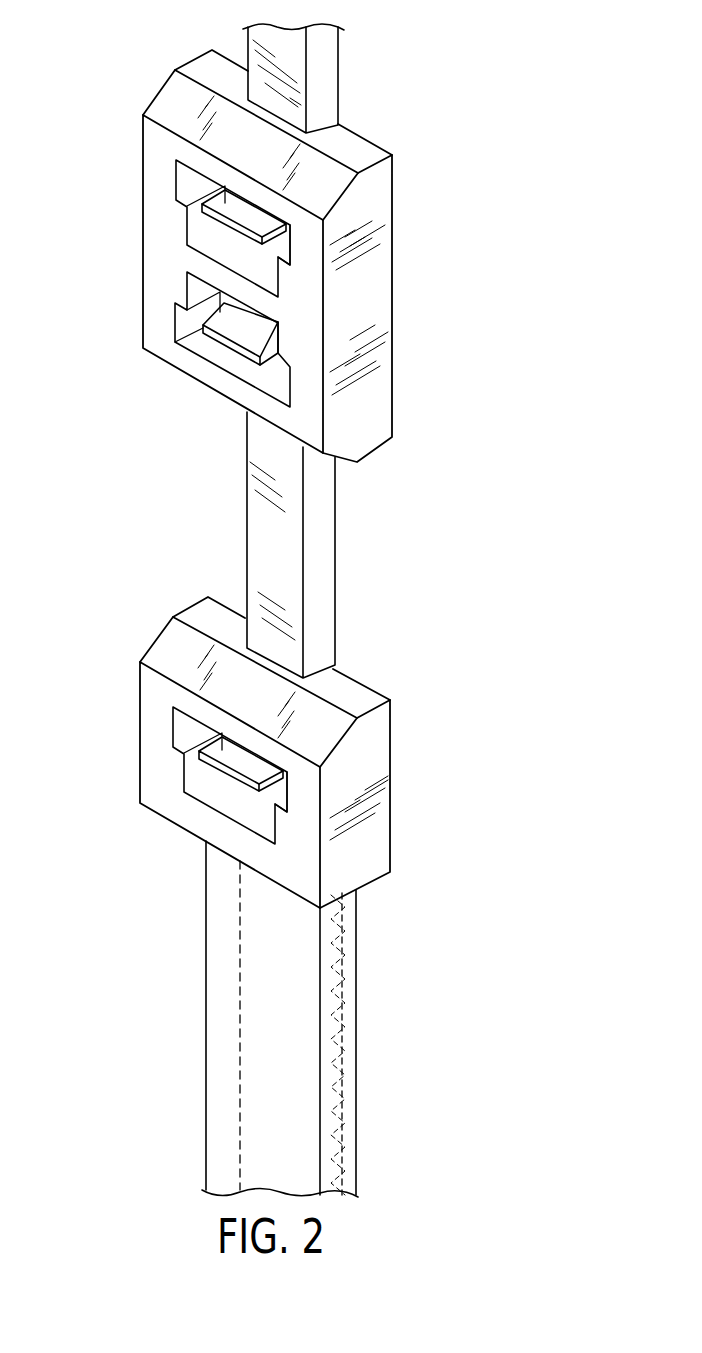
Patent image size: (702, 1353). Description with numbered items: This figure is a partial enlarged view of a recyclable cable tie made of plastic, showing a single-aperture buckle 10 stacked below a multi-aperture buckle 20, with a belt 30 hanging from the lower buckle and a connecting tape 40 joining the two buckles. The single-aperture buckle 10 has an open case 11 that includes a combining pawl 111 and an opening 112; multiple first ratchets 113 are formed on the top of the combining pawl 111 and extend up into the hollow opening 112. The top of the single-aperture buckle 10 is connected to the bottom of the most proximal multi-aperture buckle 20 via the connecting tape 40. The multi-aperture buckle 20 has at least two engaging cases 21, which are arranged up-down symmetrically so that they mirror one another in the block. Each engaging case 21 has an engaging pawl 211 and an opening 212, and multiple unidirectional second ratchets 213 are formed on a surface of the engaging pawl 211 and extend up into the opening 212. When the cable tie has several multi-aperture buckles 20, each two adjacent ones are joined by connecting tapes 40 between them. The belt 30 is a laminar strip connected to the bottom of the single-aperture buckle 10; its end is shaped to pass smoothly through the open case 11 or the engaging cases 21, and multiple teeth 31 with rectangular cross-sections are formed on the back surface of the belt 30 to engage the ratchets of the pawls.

The single-aperture buckle 10 is at (430, 778).
The open case 11 is at (182, 769).
The combining pawl 111 is at (274, 790).
The opening 112 is at (173, 730).
The first ratchets 113 is at (237, 784).
The multi-aperture buckle 20 is at (427, 322).
The engaging case 21 is at (165, 202).
The engaging pawl 211 is at (284, 246).
The opening 212 is at (175, 183).
The second ratchets 213 is at (243, 233).
The belt 30 is at (220, 1040).
The teeth 31 is at (353, 1075).
The connecting tape 40 is at (345, 592).